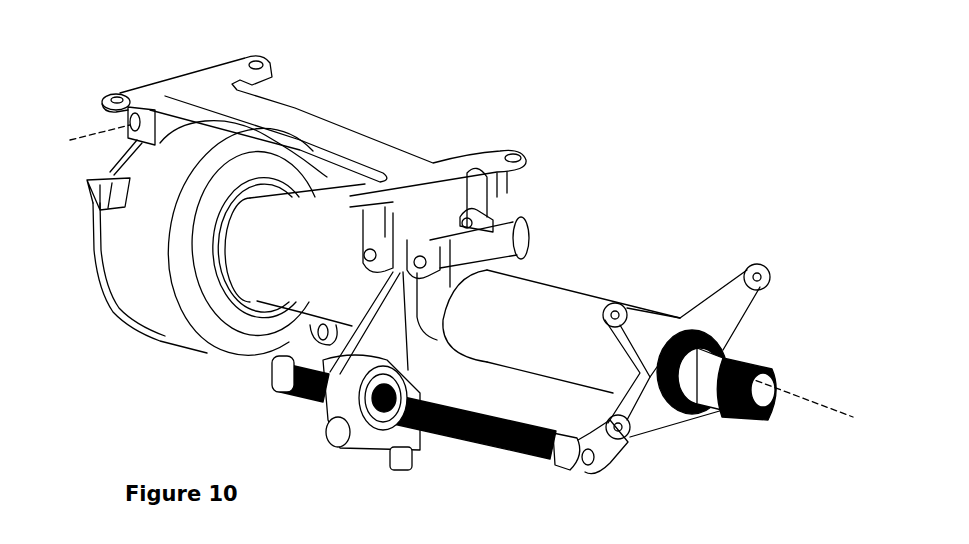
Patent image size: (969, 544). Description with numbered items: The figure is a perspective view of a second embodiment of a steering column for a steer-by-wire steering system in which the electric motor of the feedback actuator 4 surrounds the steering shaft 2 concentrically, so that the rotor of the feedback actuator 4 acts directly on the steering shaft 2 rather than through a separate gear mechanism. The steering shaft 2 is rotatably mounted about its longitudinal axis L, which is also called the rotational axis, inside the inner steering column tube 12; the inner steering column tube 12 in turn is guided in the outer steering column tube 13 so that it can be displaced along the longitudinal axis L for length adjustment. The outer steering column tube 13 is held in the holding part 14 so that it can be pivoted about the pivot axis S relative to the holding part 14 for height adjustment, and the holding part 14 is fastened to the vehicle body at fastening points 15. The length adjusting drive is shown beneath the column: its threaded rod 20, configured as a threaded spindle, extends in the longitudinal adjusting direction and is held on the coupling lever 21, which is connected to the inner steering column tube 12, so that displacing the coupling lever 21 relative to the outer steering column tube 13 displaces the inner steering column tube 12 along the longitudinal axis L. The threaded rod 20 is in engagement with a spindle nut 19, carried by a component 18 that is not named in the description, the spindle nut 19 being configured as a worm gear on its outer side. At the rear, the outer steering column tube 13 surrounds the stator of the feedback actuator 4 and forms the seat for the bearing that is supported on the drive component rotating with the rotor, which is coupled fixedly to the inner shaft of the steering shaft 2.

The steering shaft 2 is at (717, 363).
The feedback actuator 4 is at (169, 373).
The inner steering column tube 12 is at (550, 310).
The outer steering column tube 13 is at (313, 250).
The holding part 14 is at (373, 152).
The fastening points 15 is at (120, 92).
The bearing housing 18 is at (360, 437).
The spindle nut 19 is at (343, 395).
The threaded rod 20 is at (513, 452).
The coupling lever 21 is at (628, 448).
The pivot axis S is at (80, 138).
The longitudinal axis L is at (813, 403).